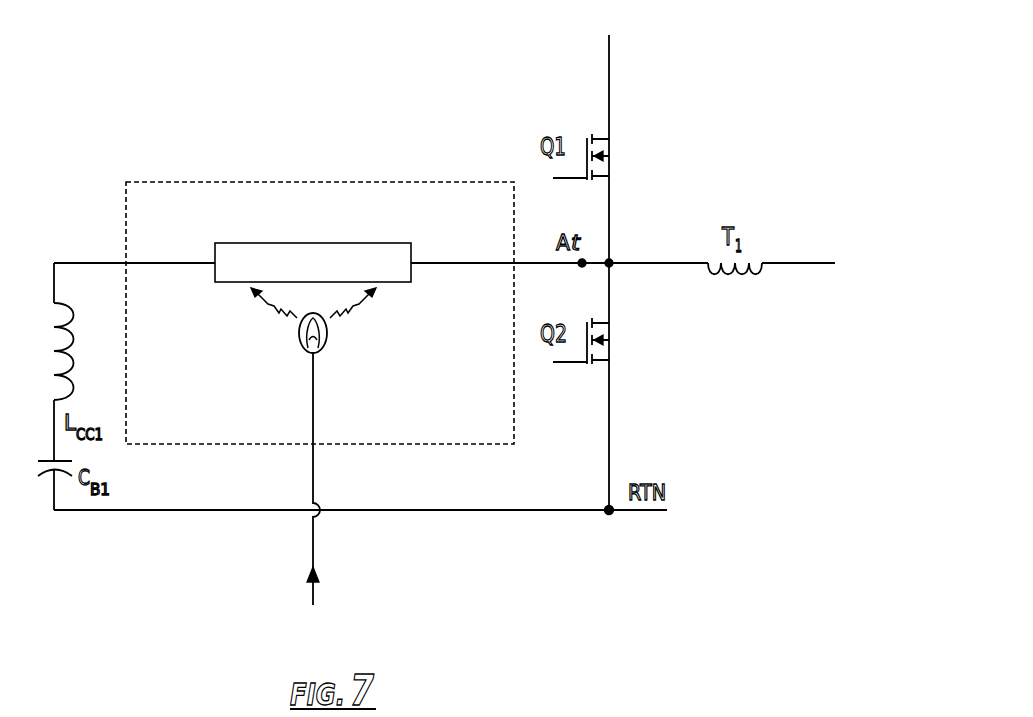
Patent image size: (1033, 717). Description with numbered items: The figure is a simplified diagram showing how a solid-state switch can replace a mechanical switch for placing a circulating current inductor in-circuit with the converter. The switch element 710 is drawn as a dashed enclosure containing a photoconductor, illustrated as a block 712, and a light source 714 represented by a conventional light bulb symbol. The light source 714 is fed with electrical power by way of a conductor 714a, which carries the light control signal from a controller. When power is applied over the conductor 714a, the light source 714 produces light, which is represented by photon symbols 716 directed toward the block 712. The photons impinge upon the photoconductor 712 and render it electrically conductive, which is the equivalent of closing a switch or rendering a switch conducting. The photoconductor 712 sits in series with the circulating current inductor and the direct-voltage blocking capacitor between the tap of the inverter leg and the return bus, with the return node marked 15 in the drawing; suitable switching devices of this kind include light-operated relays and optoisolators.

The switch element 710 is at (430, 182).
The photoconductor 712 is at (245, 243).
The light source 714 is at (298, 339).
The photon symbols 716 is at (345, 318).
The conductor 714a is at (316, 540).
The return (RTN) node 15 is at (607, 508).